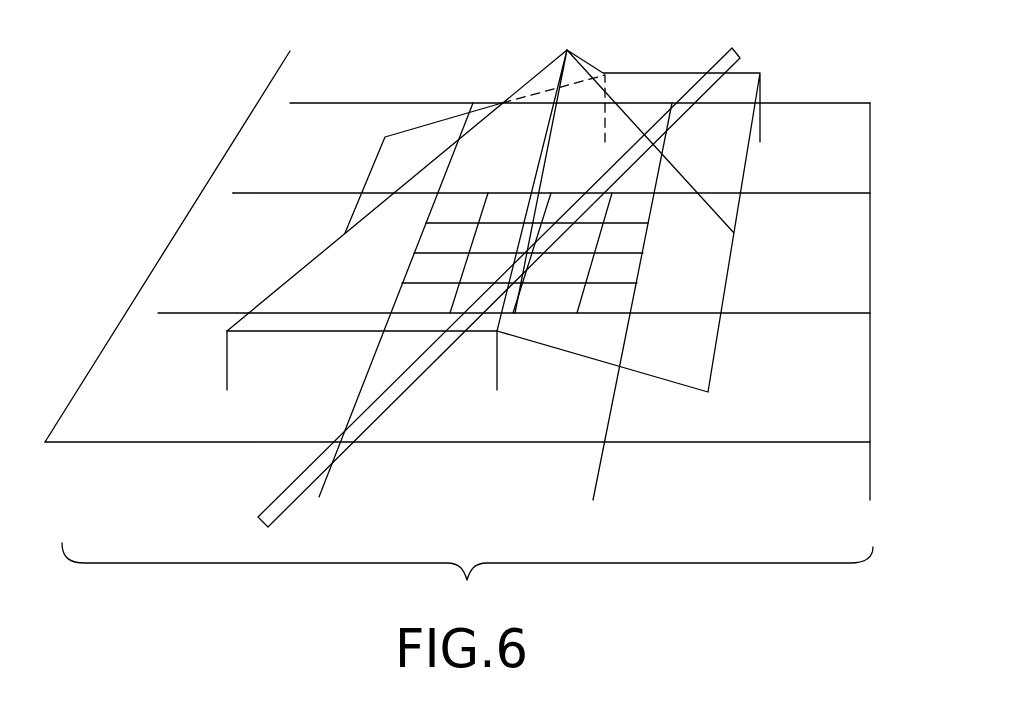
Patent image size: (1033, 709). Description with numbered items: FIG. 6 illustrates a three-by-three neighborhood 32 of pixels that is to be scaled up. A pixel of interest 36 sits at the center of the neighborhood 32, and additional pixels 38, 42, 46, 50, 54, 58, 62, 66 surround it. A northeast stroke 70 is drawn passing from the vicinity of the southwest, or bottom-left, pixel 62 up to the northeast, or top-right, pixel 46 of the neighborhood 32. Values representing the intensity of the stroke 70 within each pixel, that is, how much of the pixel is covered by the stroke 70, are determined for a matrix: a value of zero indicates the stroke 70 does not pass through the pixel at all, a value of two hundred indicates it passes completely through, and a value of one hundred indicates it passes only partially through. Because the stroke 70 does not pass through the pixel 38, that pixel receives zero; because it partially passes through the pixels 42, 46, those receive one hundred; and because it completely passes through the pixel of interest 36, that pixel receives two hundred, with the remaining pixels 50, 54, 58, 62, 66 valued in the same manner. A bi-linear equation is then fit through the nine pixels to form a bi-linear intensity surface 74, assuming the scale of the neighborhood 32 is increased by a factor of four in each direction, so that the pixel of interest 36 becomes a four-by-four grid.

The 3×3 neighborhood 32 is at (467, 578).
The pixel of interest 36 is at (605, 293).
The pixel 38 is at (278, 153).
The pixel 42 is at (642, 118).
The northeast pixel 46 is at (838, 120).
The pixel 50 is at (843, 253).
The pixel 54 is at (840, 390).
The pixel 58 is at (517, 477).
The southwest pixel 62 is at (137, 392).
The pixel 66 is at (220, 252).
The northeast stroke 70 is at (732, 47).
The bi-linear intensity surface 74 is at (435, 160).